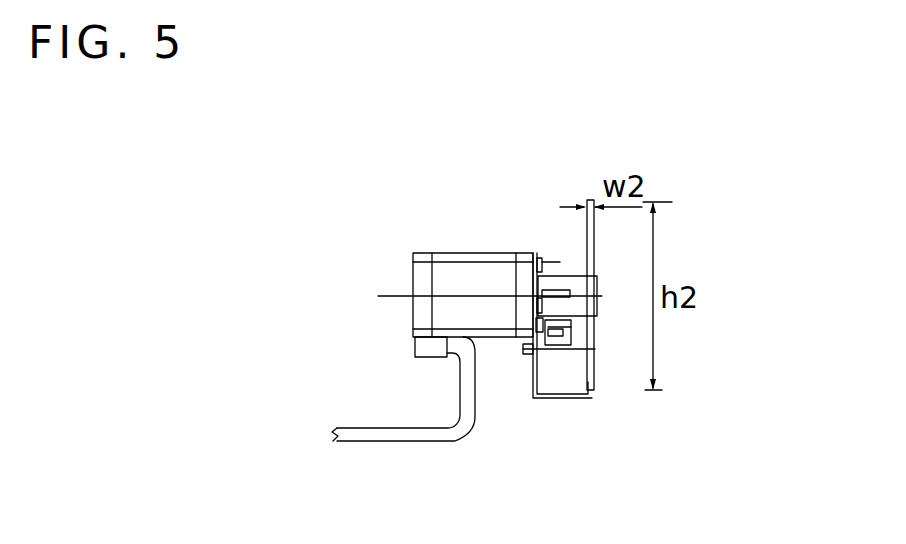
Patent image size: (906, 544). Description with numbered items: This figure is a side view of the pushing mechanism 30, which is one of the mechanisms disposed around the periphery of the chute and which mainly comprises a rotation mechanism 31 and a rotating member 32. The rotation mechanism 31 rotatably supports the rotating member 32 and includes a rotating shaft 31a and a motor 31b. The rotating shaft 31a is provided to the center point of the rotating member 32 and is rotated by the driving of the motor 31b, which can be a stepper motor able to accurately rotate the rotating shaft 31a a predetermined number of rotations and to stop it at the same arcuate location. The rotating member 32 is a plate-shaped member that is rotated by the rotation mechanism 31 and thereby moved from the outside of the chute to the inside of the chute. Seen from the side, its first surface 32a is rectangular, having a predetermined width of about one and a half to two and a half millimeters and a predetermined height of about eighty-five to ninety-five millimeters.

The pushing mechanism 30 is at (322, 194).
The rotation mechanism 31 is at (525, 163).
The rotating shaft 31a is at (570, 275).
The motor 31b is at (447, 253).
The rotating member 32 is at (589, 192).
The first surface 32a is at (588, 393).